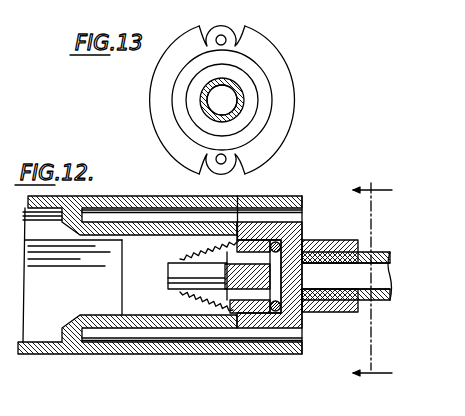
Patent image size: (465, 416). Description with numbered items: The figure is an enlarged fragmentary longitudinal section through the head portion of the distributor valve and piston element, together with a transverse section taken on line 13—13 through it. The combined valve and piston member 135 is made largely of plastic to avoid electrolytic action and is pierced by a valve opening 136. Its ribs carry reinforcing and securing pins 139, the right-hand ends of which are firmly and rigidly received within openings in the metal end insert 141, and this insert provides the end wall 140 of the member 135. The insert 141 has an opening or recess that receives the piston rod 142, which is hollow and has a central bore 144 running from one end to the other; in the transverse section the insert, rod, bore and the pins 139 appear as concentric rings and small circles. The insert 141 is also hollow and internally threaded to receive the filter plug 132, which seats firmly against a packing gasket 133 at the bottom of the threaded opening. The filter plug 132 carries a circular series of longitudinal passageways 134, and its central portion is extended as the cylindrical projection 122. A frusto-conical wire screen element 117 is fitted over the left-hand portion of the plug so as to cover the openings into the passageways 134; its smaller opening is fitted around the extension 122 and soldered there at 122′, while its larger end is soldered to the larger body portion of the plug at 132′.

In FIG. 12, the section line 13 is at (372, 290).
In FIG. 12, the frusto-conical wire screen element 117 is at (200, 297).
In FIG. 12, the cylindrical projection 122 is at (182, 275).
In FIG. 12, the solder joint 122′ is at (184, 260).
In FIG. 12, the filter plug 132 is at (263, 282).
In FIG. 12, the solder joint 132′ is at (238, 206).
In FIG. 12, the packing gasket 133 is at (283, 330).
In FIG. 12, the longitudinal passageways 134 is at (242, 294).
In FIG. 13, the combined valve and piston member 135 is at (148, 100).
In FIG. 12, the combined valve and piston member 135 is at (144, 196).
In FIG. 12, the valve opening 136 is at (122, 258).
In FIG. 13, the reinforcing and securing pins 139 is at (225, 39).
In FIG. 12, the reinforcing and securing pins 139 is at (127, 195).
In FIG. 12, the end wall 140 is at (302, 322).
In FIG. 13, the metal end insert 141 is at (262, 76).
In FIG. 12, the metal end insert 141 is at (303, 232).
In FIG. 13, the piston rod 142 is at (203, 112).
In FIG. 12, the piston rod 142 is at (387, 255).
In FIG. 13, the central bore 144 is at (224, 103).
In FIG. 12, the central bore 144 is at (387, 292).